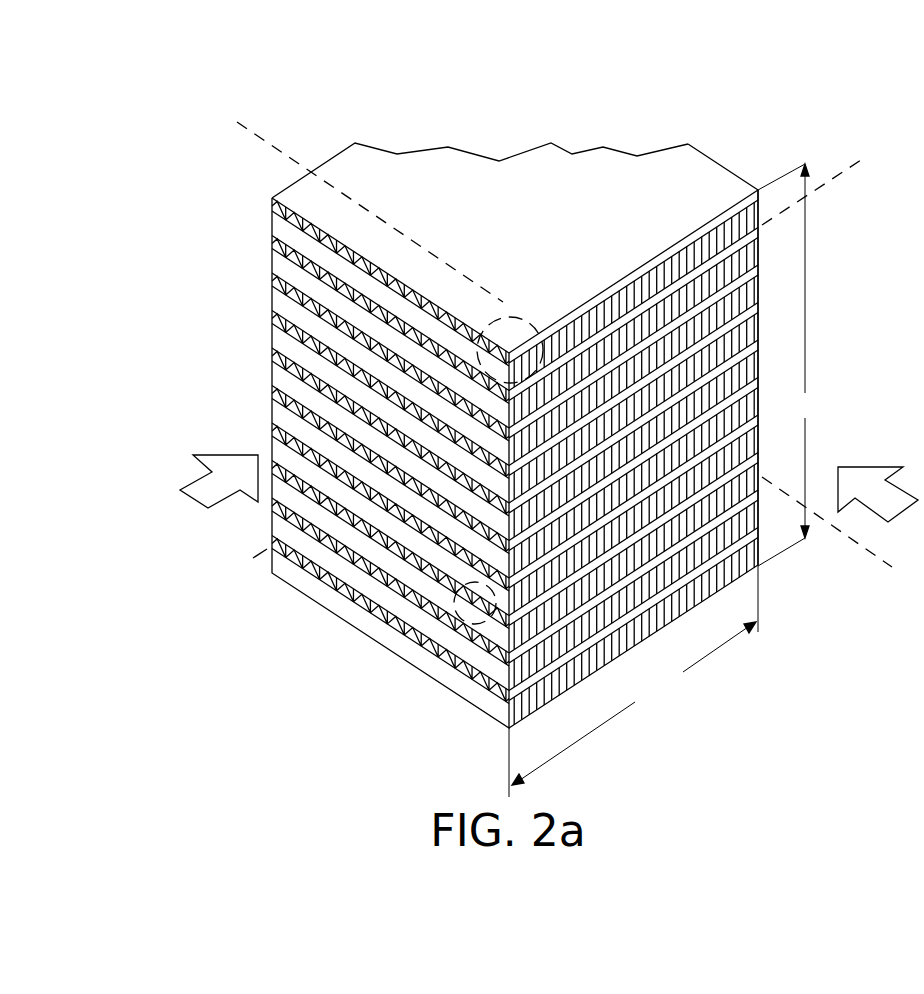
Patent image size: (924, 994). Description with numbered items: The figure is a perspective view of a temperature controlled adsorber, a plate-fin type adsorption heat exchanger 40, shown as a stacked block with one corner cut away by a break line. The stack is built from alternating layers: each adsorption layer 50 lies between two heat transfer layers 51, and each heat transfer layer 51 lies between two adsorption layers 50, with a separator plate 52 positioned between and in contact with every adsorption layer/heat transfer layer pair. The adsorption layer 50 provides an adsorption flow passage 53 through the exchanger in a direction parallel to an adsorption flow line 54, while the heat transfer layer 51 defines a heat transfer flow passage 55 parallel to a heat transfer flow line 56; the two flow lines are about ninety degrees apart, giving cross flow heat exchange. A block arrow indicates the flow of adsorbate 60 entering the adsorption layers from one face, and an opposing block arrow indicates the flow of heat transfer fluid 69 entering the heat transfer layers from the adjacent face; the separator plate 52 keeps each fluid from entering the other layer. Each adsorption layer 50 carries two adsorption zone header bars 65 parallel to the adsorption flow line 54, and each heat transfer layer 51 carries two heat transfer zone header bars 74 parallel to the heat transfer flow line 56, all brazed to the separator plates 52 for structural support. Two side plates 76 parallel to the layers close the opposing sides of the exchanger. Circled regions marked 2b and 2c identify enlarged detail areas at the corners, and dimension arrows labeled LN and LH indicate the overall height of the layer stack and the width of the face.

The adsorption heat exchanger 40 is at (213, 157).
The adsorption layer 50 is at (323, 314).
The heat transfer layer 51 is at (750, 337).
The separator plate 52 is at (687, 618).
The adsorption flow passage 53 is at (273, 423).
The adsorption flow line 54 is at (232, 572).
The heat transfer flow passage 55 is at (610, 612).
The heat transfer flow line 56 is at (850, 550).
The flow of adsorbate 60 is at (188, 482).
The adsorption zone header bar 65 is at (272, 206).
The flow of heat transfer fluid 69 is at (884, 465).
The heat transfer zone header bar 74 is at (447, 637).
The side plate 76 is at (732, 175).
The detail view 2b is at (512, 308).
The detail view 2c is at (437, 606).
The layer stack height LN is at (788, 365).
The layer width LH is at (634, 703).